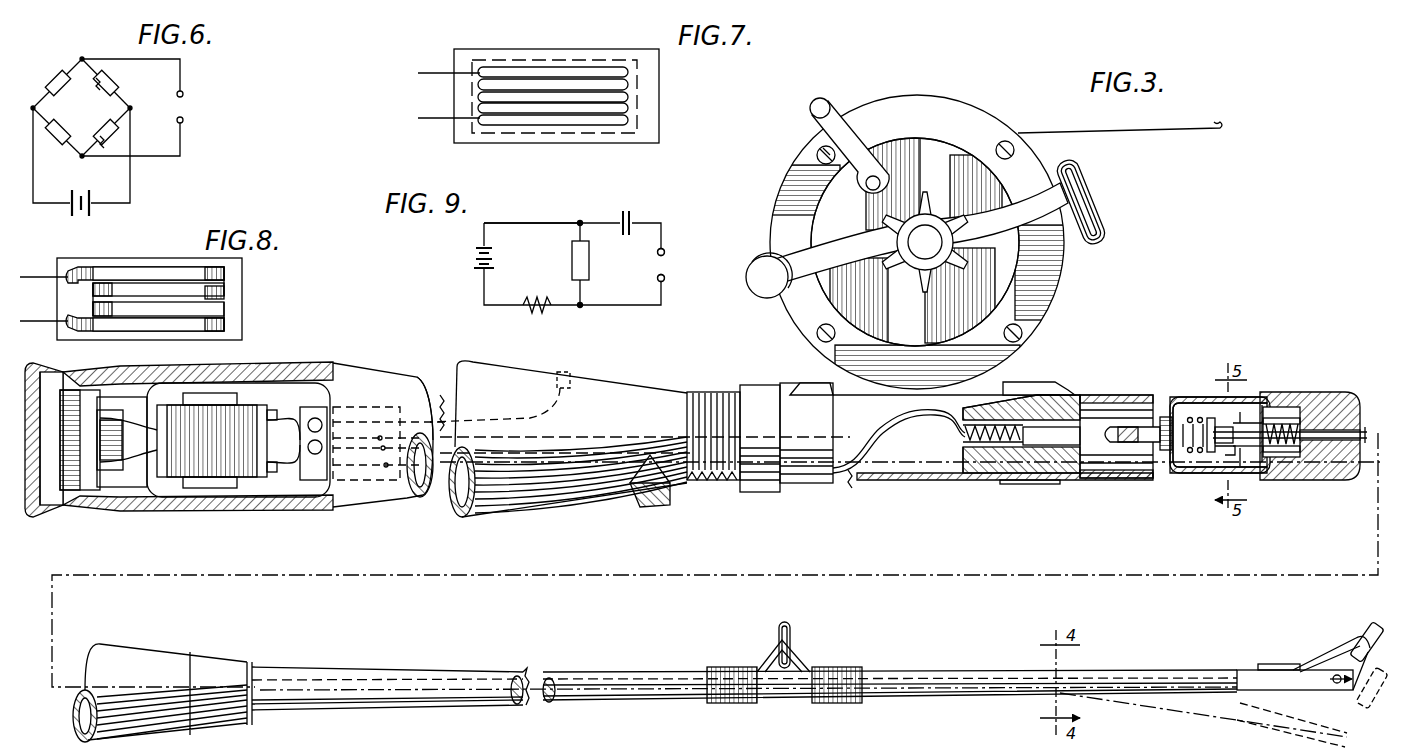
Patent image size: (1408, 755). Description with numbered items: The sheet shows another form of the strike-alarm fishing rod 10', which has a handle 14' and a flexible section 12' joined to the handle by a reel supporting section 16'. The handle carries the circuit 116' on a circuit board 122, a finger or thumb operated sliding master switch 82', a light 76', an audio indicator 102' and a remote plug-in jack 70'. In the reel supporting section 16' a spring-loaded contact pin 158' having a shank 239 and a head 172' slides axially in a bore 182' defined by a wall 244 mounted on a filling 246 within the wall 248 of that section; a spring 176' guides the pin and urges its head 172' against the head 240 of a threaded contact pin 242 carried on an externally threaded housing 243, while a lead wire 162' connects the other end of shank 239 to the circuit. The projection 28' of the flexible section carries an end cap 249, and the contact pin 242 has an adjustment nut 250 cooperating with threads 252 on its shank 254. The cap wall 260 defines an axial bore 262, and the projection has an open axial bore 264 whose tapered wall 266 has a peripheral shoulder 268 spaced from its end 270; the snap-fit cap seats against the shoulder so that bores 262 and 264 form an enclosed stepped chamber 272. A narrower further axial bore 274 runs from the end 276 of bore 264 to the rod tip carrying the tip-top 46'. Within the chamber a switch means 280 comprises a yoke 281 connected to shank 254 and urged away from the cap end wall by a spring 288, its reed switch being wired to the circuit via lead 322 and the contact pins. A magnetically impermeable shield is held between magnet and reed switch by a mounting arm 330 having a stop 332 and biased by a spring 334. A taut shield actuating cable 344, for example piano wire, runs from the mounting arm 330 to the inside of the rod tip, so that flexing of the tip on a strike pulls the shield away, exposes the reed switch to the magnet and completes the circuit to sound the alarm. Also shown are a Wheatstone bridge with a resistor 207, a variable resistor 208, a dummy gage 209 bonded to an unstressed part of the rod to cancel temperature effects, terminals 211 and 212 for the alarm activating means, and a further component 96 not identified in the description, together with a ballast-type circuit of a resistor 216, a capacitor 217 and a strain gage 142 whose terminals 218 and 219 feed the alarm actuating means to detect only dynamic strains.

In FIG. 6, the strain gage 142 is at (58, 78).
In FIG. 9, the strain gage 142 is at (589, 259).
In FIG. 6, the resistor 207 is at (106, 130).
In FIG. 6, the variable resistor 208 is at (104, 72).
In FIG. 6, the dummy gage 209 is at (58, 140).
In FIG. 6, the battery 96 is at (86, 192).
In FIG. 6, the terminal 211 is at (183, 94).
In FIG. 6, the terminal 212 is at (183, 121).
In FIG. 9, the resistor 216 is at (534, 300).
In FIG. 9, the capacitor 217 is at (626, 212).
In FIG. 9, the terminal 218 is at (665, 251).
In FIG. 9, the terminal 219 is at (665, 279).
In FIG. 3, the rod 10' is at (400, 329).
In FIG. 3, the flexible section 12' is at (713, 682).
In FIG. 3, the handle 14' is at (253, 462).
In FIG. 3, the reel supporting section 16' is at (993, 469).
In FIG. 3, the projection 28' is at (715, 560).
In FIG. 3, the tip-top 46' is at (1224, 678).
In FIG. 3, the remote plug-in jack 70' is at (44, 459).
In FIG. 3, the light 76' is at (513, 381).
In FIG. 3, the master switch 82' is at (568, 451).
In FIG. 3, the audio indicator 102' is at (112, 472).
In FIG. 3, the circuit 116' is at (417, 397).
In FIG. 3, the circuit board 122 is at (333, 425).
In FIG. 3, the spring-loaded contact pin 158' is at (1015, 488).
In FIG. 3, the lead wire 162' is at (807, 459).
In FIG. 3, the head 172' is at (1007, 476).
In FIG. 3, the spring 176' is at (899, 441).
In FIG. 3, the bore 182' is at (1048, 475).
In FIG. 3, the shank 239 is at (965, 437).
In FIG. 3, the head 240 is at (1107, 430).
In FIG. 3, the threaded contact pin 242 is at (1105, 413).
In FIG. 3, the externally threaded housing 243 is at (1117, 430).
In FIG. 3, the wall 244 is at (1035, 398).
In FIG. 3, the filling 246 is at (1045, 415).
In FIG. 3, the wall 248 is at (1070, 482).
In FIG. 3, the end cap 249 is at (1178, 478).
In FIG. 3, the adjustment nut 250 is at (1165, 420).
In FIG. 3, the threads 252 is at (1127, 425).
In FIG. 3, the shank 254 is at (1132, 441).
In FIG. 3, the wall 260 is at (1235, 425).
In FIG. 3, the axial bore 262 is at (1197, 408).
In FIG. 3, the open axial bore 264 is at (1277, 418).
In FIG. 3, the wall 266 is at (1240, 463).
In FIG. 3, the peripheral shoulder 268 is at (1262, 470).
In FIG. 3, the end 270 is at (1207, 472).
In FIG. 3, the enclosed stepped chamber 272 is at (1180, 473).
In FIG. 3, the further axial bore 274 is at (1343, 404).
In FIG. 3, the end 276 is at (1290, 420).
In FIG. 3, the switch means 280 is at (1242, 423).
In FIG. 3, the yoke 281 is at (1197, 457).
In FIG. 3, the spring 288 is at (1197, 417).
In FIG. 3, the lead 322 is at (1200, 400).
In FIG. 3, the mounting arm 330 is at (1268, 458).
In FIG. 3, the stop 332 is at (1257, 430).
In FIG. 3, the spring 334 is at (1288, 440).
In FIG. 3, the shield actuating cable 344 is at (1337, 444).